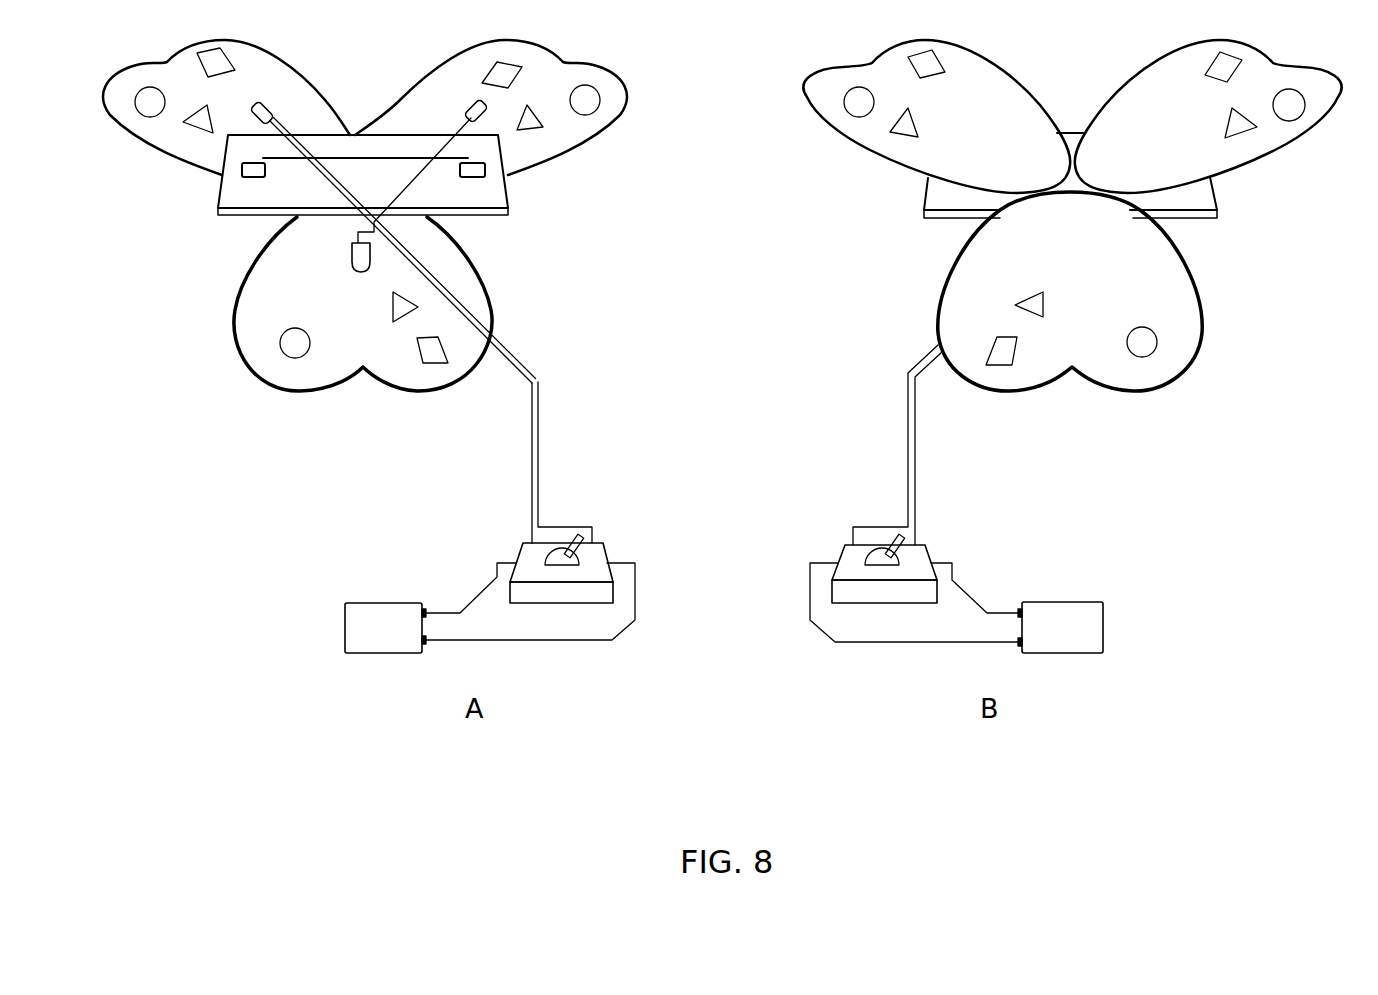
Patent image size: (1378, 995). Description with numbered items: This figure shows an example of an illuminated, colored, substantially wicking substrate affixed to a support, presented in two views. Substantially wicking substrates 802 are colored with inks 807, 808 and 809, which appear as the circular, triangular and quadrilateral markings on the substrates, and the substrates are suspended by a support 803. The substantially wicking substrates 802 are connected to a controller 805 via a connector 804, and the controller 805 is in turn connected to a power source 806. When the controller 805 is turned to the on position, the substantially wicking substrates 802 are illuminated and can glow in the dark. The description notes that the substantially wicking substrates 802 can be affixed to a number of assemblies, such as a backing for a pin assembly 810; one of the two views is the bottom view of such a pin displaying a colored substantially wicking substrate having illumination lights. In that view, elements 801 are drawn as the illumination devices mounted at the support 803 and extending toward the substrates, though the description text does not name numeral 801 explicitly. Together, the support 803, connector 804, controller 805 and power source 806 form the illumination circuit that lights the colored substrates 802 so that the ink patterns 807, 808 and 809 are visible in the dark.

The probe 801 is at (478, 103).
The substantially wicking substrate 802 is at (130, 133).
The support 803 is at (509, 213).
The connector 804 is at (533, 403).
The controller 805 is at (523, 545).
The power source 806 is at (380, 602).
The ink 807 is at (1158, 342).
The ink 808 is at (1043, 317).
The ink 809 is at (1012, 365).
The pin assembly 810 is at (283, 160).